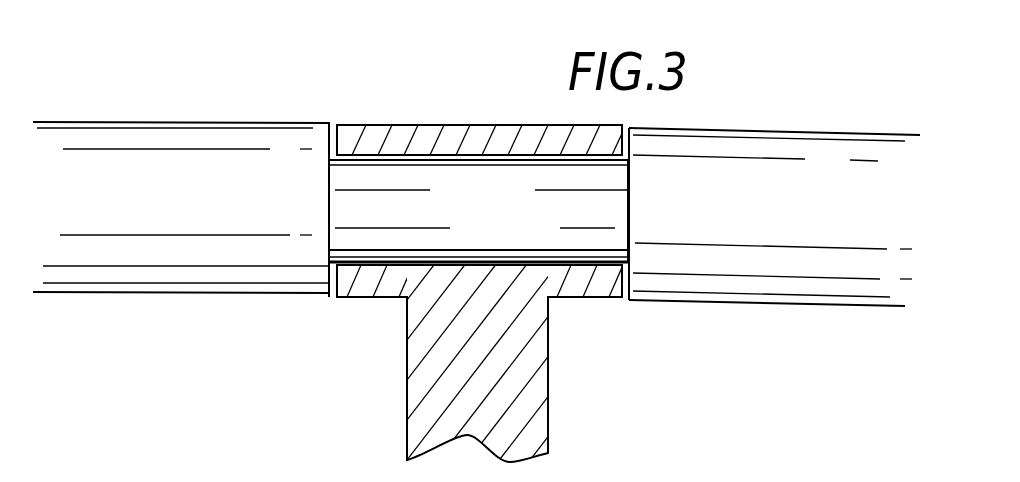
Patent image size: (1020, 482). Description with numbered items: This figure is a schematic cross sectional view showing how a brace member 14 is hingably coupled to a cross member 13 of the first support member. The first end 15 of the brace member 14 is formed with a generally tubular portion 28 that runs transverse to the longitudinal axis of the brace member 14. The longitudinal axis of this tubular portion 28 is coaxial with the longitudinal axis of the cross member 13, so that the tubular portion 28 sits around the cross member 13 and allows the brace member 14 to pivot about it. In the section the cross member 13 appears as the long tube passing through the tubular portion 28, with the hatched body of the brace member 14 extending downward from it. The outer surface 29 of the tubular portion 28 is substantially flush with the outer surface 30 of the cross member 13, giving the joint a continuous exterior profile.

The cross member 13 is at (745, 165).
The brace member 14 is at (407, 364).
The first end 15 is at (476, 142).
The tubular portion 28 is at (522, 142).
The outer surface 29 is at (402, 125).
The outer surface 30 is at (290, 124).